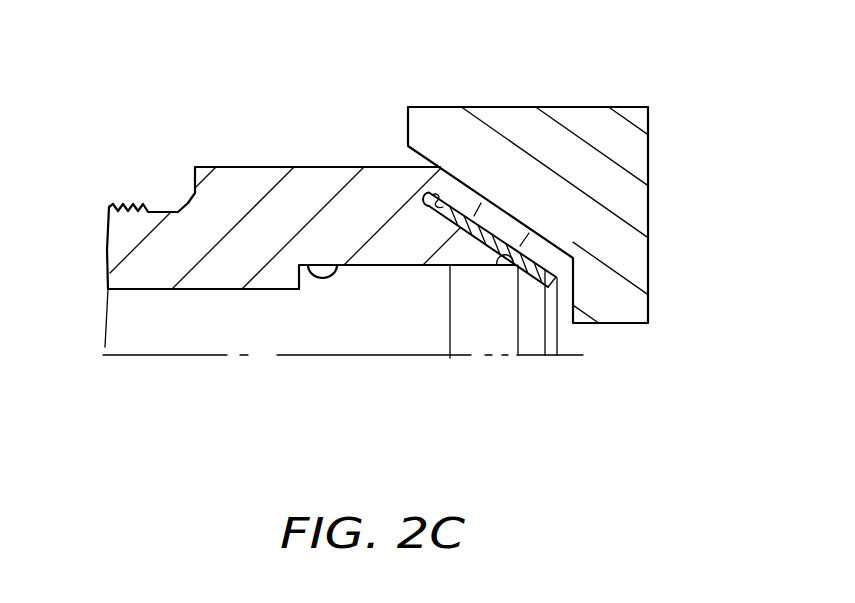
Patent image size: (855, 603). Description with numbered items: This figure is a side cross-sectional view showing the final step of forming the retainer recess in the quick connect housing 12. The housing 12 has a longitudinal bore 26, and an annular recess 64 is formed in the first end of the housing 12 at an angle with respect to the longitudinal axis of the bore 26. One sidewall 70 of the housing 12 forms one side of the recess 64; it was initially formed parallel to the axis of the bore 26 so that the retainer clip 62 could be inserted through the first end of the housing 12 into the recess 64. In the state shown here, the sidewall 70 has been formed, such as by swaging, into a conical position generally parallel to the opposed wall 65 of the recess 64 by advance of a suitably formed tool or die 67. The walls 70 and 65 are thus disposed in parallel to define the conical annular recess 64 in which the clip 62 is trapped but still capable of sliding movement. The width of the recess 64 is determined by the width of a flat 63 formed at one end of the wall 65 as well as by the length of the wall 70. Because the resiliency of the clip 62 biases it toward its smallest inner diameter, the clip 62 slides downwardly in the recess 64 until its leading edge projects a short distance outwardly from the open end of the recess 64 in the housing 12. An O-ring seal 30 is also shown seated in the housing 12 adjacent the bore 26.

The housing 12 is at (241, 167).
The bore 26 is at (288, 332).
The O-ring 30 is at (322, 264).
The retainer clip 62 is at (475, 309).
The flat 63 is at (424, 203).
The annular recess 64 is at (445, 212).
The opposed wall 65 is at (518, 355).
The tool or die 67 is at (565, 112).
The sidewall 70 is at (472, 199).